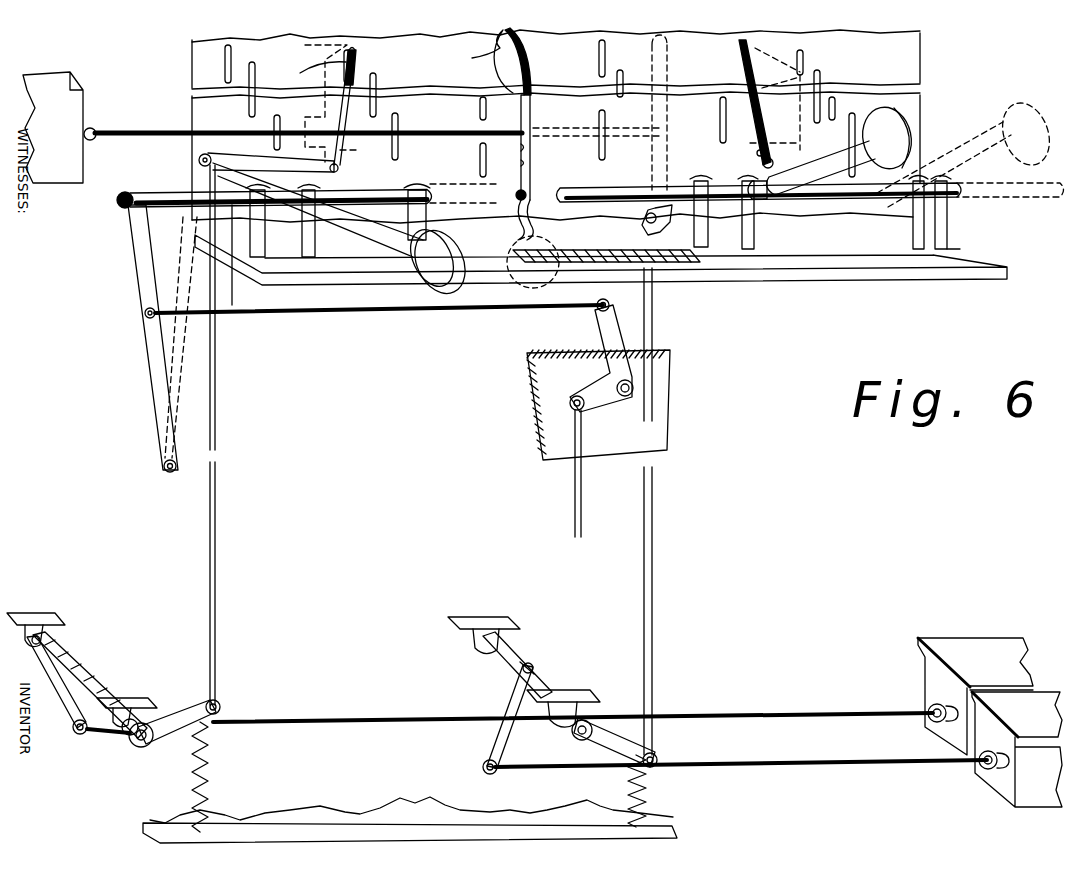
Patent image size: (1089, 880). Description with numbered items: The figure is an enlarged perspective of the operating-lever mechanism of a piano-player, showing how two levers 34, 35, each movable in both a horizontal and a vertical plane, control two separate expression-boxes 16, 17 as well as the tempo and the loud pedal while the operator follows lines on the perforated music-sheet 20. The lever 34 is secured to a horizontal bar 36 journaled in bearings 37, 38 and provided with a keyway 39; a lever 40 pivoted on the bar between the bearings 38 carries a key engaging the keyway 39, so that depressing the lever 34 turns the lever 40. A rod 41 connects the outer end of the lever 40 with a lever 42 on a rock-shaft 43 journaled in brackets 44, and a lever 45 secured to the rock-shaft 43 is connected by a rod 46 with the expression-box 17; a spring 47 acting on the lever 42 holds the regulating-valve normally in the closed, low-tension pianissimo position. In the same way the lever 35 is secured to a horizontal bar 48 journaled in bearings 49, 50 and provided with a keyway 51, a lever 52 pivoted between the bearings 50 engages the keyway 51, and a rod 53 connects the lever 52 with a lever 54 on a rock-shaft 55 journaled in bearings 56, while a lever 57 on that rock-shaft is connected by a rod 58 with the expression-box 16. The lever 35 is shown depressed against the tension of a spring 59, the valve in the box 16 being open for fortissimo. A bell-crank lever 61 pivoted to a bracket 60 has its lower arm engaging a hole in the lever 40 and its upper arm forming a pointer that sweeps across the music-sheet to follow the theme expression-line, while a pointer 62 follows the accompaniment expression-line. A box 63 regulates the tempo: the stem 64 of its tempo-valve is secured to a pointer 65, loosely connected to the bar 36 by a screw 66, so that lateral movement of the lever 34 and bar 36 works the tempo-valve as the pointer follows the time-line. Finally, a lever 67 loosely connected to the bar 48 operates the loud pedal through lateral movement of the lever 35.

The expression-box 16 is at (975, 696).
The expression-box 17 is at (1017, 749).
The perforated music-sheet 20 is at (910, 61).
The lever 34 is at (890, 123).
The lever 35 is at (433, 279).
The horizontal bar 36 is at (957, 190).
The bearing 37 is at (943, 227).
The bearings 38 is at (750, 250).
The keyway 39 is at (582, 183).
The lever 40 is at (727, 163).
The rod 41 is at (653, 573).
The lever 42 is at (607, 743).
The rock-shaft 43 is at (542, 680).
The brackets 44 is at (493, 620).
The lever 45 is at (507, 737).
The rod 46 is at (745, 760).
The spring 47 is at (647, 798).
The horizontal bar 48 is at (181, 168).
The bearing 49 is at (407, 193).
The bearings 50 is at (313, 253).
The keyway 51 is at (232, 305).
The lever 52 is at (213, 140).
The rod 53 is at (217, 498).
The lever 54 is at (175, 720).
The rock-shaft 55 is at (78, 663).
The bearings 56 is at (47, 617).
The lever 57 is at (67, 690).
The rod 58 is at (377, 723).
The spring 59 is at (210, 780).
The bracket 60 is at (773, 167).
The bell-crank lever 61 is at (753, 63).
The pointer 62 is at (283, 168).
The tempo-regulating box 63 is at (53, 127).
The stem 64 is at (413, 132).
The pointer 65 is at (524, 63).
The screw 66 is at (522, 200).
The lever 67 is at (153, 346).